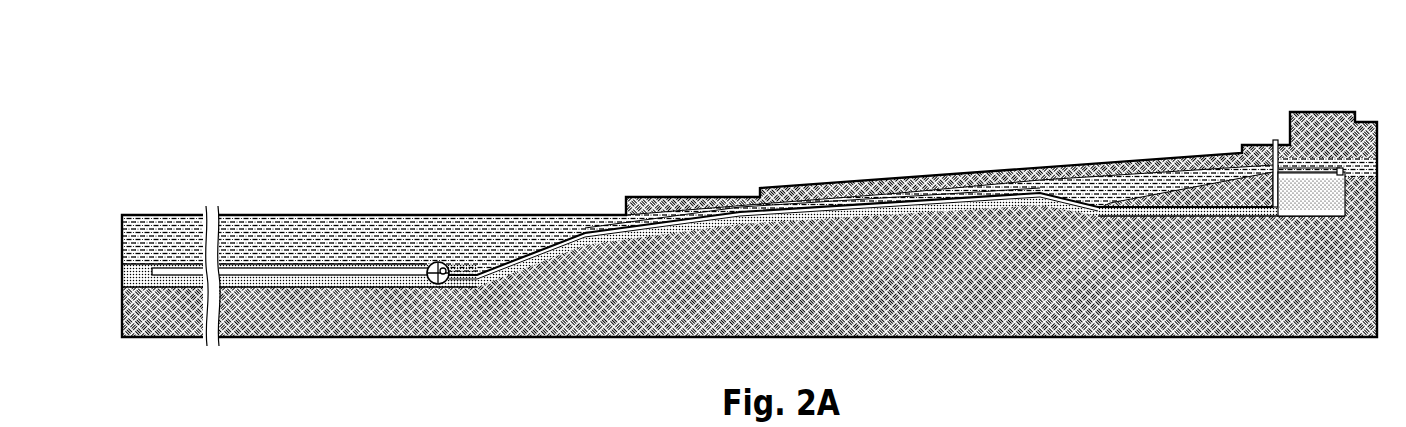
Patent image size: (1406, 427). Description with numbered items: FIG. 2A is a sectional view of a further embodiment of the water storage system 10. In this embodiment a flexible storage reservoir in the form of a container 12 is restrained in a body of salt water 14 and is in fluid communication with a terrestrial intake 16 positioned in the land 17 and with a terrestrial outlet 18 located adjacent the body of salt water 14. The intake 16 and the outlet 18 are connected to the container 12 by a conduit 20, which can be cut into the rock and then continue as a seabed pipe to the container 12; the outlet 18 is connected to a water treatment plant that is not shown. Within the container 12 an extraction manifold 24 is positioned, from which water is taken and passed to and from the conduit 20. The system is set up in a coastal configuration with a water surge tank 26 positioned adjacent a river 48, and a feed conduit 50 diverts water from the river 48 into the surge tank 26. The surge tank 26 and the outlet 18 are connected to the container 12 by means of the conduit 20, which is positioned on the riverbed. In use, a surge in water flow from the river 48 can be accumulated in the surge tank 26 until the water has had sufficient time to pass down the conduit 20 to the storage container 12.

The water storage system 10 is at (322, 116).
The container 12 is at (262, 278).
The body of salt water 14 is at (428, 240).
The terrestrial intake 16 is at (1177, 212).
The land 17 is at (1000, 318).
The terrestrial outlet 18 is at (1275, 142).
The conduit 20 is at (915, 207).
The extraction manifold 24 is at (357, 273).
The water surge tank 26 is at (1298, 185).
The river 48 is at (725, 210).
The feed conduit 50 is at (1340, 168).